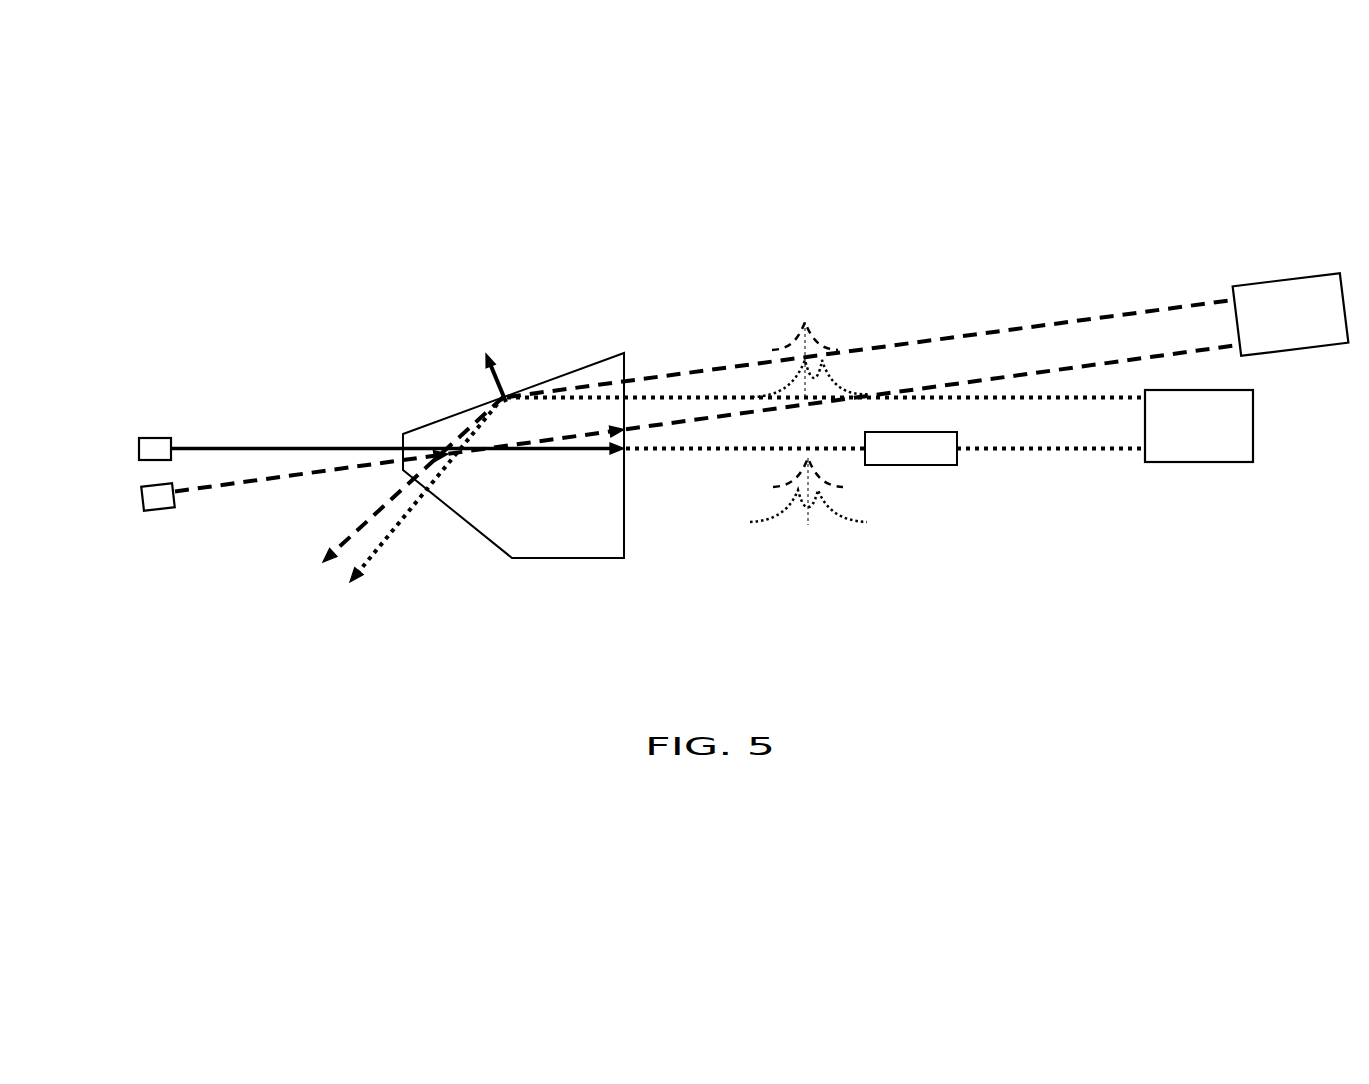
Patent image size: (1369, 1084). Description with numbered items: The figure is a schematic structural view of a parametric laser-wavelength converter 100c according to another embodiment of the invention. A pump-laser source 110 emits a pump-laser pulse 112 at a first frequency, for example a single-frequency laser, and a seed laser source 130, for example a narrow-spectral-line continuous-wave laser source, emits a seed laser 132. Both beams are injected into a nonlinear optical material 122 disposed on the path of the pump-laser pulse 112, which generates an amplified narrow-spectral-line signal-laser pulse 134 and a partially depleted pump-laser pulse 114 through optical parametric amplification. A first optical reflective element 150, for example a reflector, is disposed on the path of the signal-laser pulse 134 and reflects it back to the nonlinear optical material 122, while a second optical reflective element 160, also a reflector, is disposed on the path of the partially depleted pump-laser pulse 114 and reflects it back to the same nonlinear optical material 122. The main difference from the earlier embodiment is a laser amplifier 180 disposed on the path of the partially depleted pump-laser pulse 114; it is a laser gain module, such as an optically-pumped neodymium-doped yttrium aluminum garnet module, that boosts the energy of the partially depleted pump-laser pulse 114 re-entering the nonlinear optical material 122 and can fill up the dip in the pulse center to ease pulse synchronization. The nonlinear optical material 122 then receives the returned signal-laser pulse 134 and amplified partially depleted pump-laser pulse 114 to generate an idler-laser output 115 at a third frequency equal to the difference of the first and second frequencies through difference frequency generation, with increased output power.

The parametric laser-wavelength converter 100c is at (1178, 575).
The pump-laser source 110 is at (139, 444).
The pump-laser pulse 112 is at (215, 447).
The partially depleted pump-laser pulse 114 is at (662, 450).
The idler-laser output 115 is at (500, 393).
The nonlinear optical material 122 is at (567, 373).
The seed laser source 130 is at (141, 496).
The seed laser 132 is at (203, 490).
The signal-laser pulse 134 is at (1155, 357).
The first optical reflective element 150 is at (1282, 277).
The second optical reflective element 160 is at (1190, 462).
The laser amplifier 180 is at (903, 467).